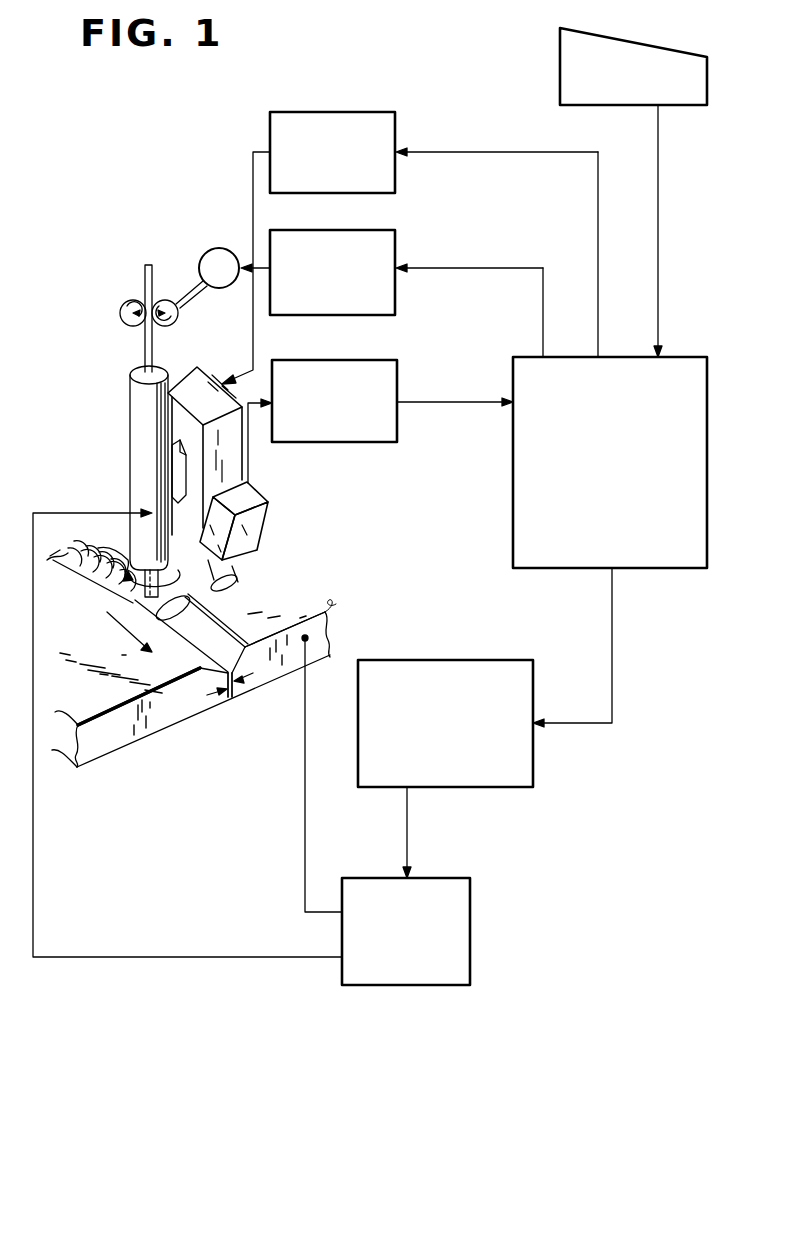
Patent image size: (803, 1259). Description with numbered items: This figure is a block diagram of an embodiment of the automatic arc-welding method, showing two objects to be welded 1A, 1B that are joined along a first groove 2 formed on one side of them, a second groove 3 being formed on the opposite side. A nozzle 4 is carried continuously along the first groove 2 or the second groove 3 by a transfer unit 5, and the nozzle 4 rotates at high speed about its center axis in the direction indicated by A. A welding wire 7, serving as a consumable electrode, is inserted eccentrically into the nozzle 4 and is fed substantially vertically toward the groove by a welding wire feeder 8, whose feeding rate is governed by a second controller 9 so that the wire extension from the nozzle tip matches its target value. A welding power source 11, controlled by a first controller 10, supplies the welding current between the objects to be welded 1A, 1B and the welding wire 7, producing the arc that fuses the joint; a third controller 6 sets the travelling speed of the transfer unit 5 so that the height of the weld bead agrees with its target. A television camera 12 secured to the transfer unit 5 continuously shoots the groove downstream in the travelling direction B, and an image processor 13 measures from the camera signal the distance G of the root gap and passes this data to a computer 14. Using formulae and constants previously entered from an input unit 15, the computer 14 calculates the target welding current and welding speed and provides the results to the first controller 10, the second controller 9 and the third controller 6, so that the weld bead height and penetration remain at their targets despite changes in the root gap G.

The object to be welded 1A is at (153, 722).
The object to be welded 1B is at (260, 667).
The first groove 2 is at (220, 640).
The second groove 3 is at (135, 452).
The nozzle 4 is at (207, 380).
The transfer unit 5 is at (395, 113).
The third controller 6 is at (147, 350).
The welding wire 7 is at (218, 247).
The welding wire feeder 8 is at (395, 231).
The second controller 9 is at (440, 660).
The first controller 10 is at (470, 932).
The welding power source 11 is at (258, 520).
The television camera 12 is at (397, 361).
The image processor 13 is at (690, 356).
The computer 14 is at (560, 58).
The input unit 15 is at (107, 575).
The rotation direction of the nozzle A is at (203, 592).
The travelling direction of the nozzle B is at (117, 625).
The distance of the root gap G is at (230, 698).